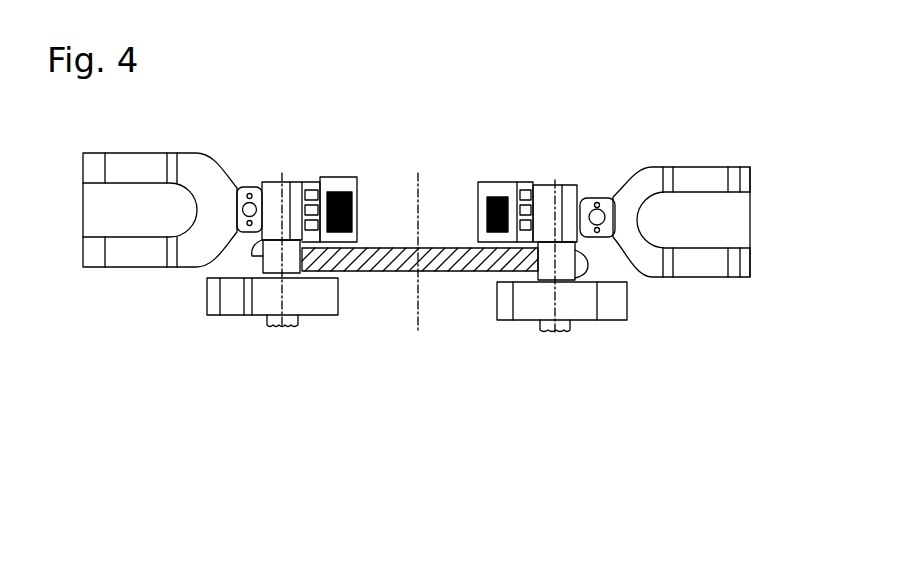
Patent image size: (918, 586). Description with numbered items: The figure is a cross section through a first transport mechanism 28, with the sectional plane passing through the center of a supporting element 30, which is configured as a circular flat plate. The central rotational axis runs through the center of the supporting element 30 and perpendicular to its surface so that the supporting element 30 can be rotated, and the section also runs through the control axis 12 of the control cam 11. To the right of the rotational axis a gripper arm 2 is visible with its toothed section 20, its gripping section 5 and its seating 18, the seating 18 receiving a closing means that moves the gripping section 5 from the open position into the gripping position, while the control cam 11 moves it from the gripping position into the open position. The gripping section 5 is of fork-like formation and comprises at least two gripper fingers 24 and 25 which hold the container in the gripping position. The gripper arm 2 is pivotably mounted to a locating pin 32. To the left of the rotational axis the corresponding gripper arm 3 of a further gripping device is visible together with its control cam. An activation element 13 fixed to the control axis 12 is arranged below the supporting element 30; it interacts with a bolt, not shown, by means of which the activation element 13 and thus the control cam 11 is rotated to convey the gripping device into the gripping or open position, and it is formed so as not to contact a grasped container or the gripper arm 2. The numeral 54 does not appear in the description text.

The gripper arm 2 is at (672, 112).
The gripper arm 3 is at (200, 132).
The gripping section 5 is at (683, 300).
The control cam 11 is at (565, 183).
The control axis 12 is at (547, 333).
The activation element 13 is at (497, 330).
The seating 18 is at (610, 180).
The toothed section 20 is at (473, 210).
The gripper finger 24 is at (753, 171).
The gripper finger 25 is at (753, 253).
The transport mechanism 28 is at (478, 430).
The supporting element 30 is at (388, 277).
The locating pin 32 is at (492, 180).
The axis of rotation 54 is at (417, 177).